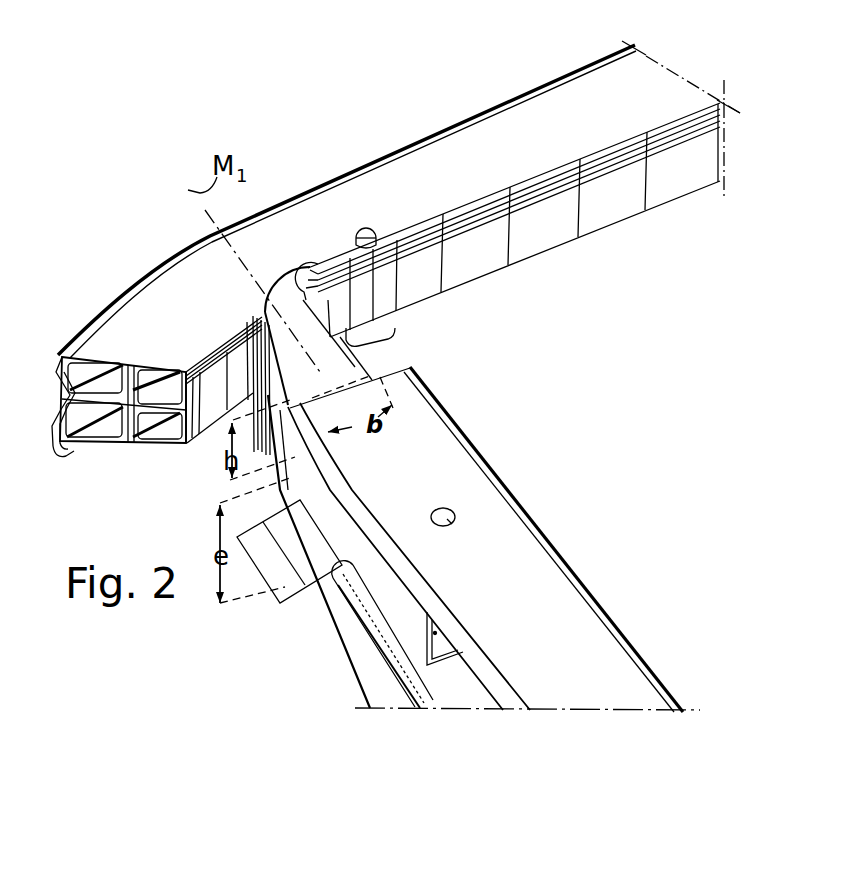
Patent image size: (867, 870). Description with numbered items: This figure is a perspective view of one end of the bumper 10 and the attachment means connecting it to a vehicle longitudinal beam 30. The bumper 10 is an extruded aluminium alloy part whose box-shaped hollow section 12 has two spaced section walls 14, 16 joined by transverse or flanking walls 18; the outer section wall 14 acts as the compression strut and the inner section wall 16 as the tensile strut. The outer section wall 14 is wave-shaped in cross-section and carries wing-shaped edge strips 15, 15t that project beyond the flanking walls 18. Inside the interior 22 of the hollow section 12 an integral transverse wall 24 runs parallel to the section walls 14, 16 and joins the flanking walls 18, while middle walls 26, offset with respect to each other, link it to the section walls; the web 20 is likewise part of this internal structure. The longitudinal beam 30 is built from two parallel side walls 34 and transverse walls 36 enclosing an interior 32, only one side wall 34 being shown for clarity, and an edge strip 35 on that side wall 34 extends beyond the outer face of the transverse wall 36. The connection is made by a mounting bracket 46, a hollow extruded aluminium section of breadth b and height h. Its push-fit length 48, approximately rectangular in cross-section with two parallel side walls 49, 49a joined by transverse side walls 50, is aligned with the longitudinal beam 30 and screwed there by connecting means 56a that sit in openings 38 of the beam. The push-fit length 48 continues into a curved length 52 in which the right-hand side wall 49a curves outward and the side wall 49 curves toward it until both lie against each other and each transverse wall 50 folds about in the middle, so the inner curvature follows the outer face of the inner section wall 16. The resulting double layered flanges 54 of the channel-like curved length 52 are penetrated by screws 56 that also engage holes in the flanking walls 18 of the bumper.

The bumper 10 is at (652, 57).
The box-shaped hollow section 12 is at (468, 160).
The outer section wall 14 is at (87, 353).
The edge strip 15 is at (556, 66).
The edge strip 15t is at (63, 446).
The inner section wall 16 is at (624, 202).
The transverse or flanking wall 18 is at (614, 118).
The panel web 20 is at (168, 440).
The interior of the hollow section 22 is at (171, 447).
The integral transverse wall 24 is at (123, 423).
The middle wall 26 is at (127, 370).
The longitudinal beam 30 is at (160, 2).
The interior of the longitudinal beam 32 is at (460, 675).
The side wall of the longitudinal beam 34 is at (505, 477).
The edge strip 35 is at (549, 531).
The transverse wall of the longitudinal beam 36 is at (427, 437).
The opening 38 is at (440, 507).
The mounting bracket 46 is at (392, 358).
The push-fit length 48 is at (335, 523).
The side wall 49 is at (387, 580).
The side wall 49a is at (385, 313).
The transverse side wall 50 is at (336, 258).
The curved length 52 is at (262, 302).
The double layered flange 54 is at (305, 265).
The screw 56 is at (377, 231).
The connecting means 56a is at (448, 523).